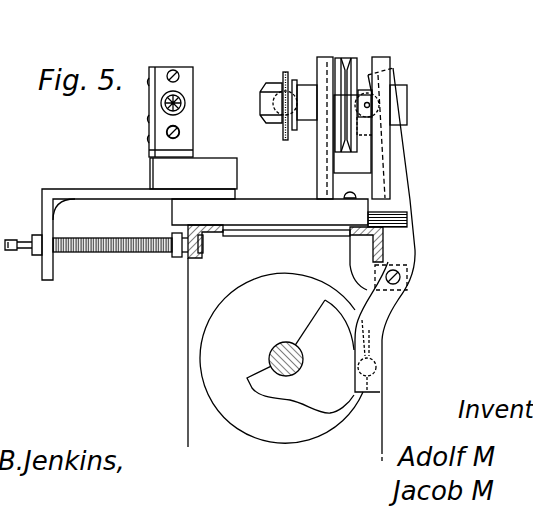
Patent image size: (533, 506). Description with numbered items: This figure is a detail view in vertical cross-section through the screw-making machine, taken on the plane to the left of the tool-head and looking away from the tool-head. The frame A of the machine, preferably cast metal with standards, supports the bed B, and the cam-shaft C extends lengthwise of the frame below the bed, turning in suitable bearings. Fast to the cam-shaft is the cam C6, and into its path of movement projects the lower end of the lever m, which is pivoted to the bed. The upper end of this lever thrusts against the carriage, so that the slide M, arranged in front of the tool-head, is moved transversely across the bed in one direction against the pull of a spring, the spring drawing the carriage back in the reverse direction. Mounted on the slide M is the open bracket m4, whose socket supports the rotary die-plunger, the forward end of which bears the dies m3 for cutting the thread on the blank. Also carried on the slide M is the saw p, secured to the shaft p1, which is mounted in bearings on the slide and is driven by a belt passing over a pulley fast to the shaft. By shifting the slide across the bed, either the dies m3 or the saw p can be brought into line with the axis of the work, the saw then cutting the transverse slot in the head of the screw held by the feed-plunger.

The frame A is at (205, 318).
The bed B is at (282, 246).
The cam-shaft C is at (274, 349).
The cam C6 is at (300, 333).
The slide M is at (160, 128).
The lever m is at (384, 265).
The dies m3 is at (185, 103).
The open bracket m4 is at (189, 133).
The saw p is at (345, 62).
The shaft p1 is at (310, 120).